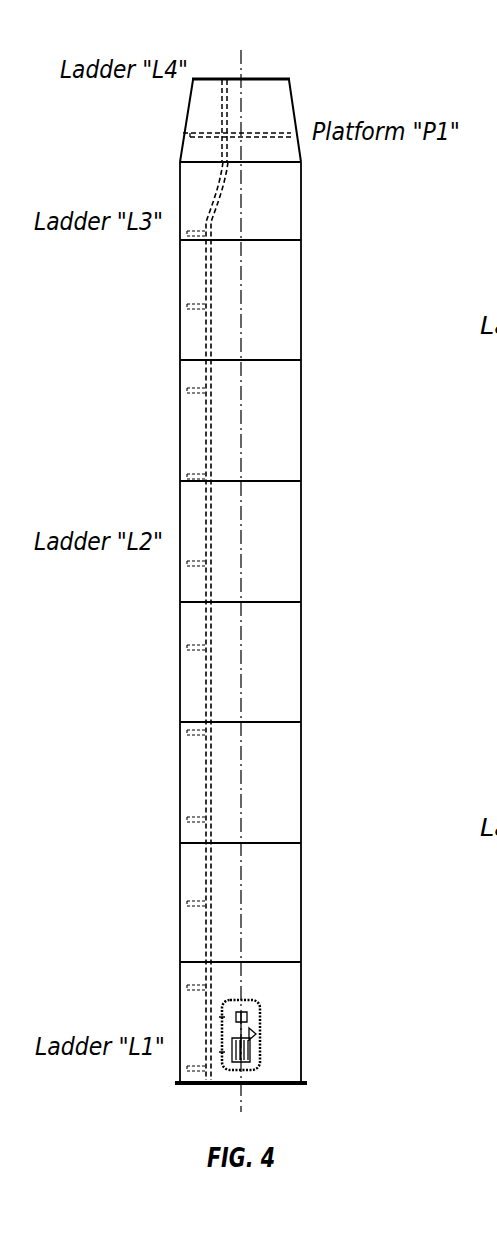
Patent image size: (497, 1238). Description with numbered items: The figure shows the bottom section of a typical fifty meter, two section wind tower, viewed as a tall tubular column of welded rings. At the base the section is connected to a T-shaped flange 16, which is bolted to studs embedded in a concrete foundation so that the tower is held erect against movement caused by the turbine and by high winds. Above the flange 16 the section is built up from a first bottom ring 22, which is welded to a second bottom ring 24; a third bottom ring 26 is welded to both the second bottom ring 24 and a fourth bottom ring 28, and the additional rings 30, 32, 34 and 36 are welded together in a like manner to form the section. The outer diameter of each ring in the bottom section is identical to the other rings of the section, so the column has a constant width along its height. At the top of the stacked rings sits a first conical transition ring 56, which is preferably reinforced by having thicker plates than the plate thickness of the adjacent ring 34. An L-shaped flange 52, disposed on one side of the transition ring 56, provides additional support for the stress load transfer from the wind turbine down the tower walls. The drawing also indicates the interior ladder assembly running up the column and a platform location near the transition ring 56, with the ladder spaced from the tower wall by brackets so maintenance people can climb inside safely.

The T-shaped flange 16 is at (275, 1085).
The first bottom ring 22 is at (301, 1020).
The second bottom ring 24 is at (301, 900).
The third bottom ring 26 is at (301, 780).
The fourth bottom ring 28 is at (301, 660).
The additional ring 30 is at (301, 540).
The additional ring 32 is at (301, 419).
The additional ring 34 is at (301, 298).
The additional ring 36 is at (301, 200).
The L-shaped flange 52 is at (262, 78).
The first conical transition ring 56 is at (189, 126).